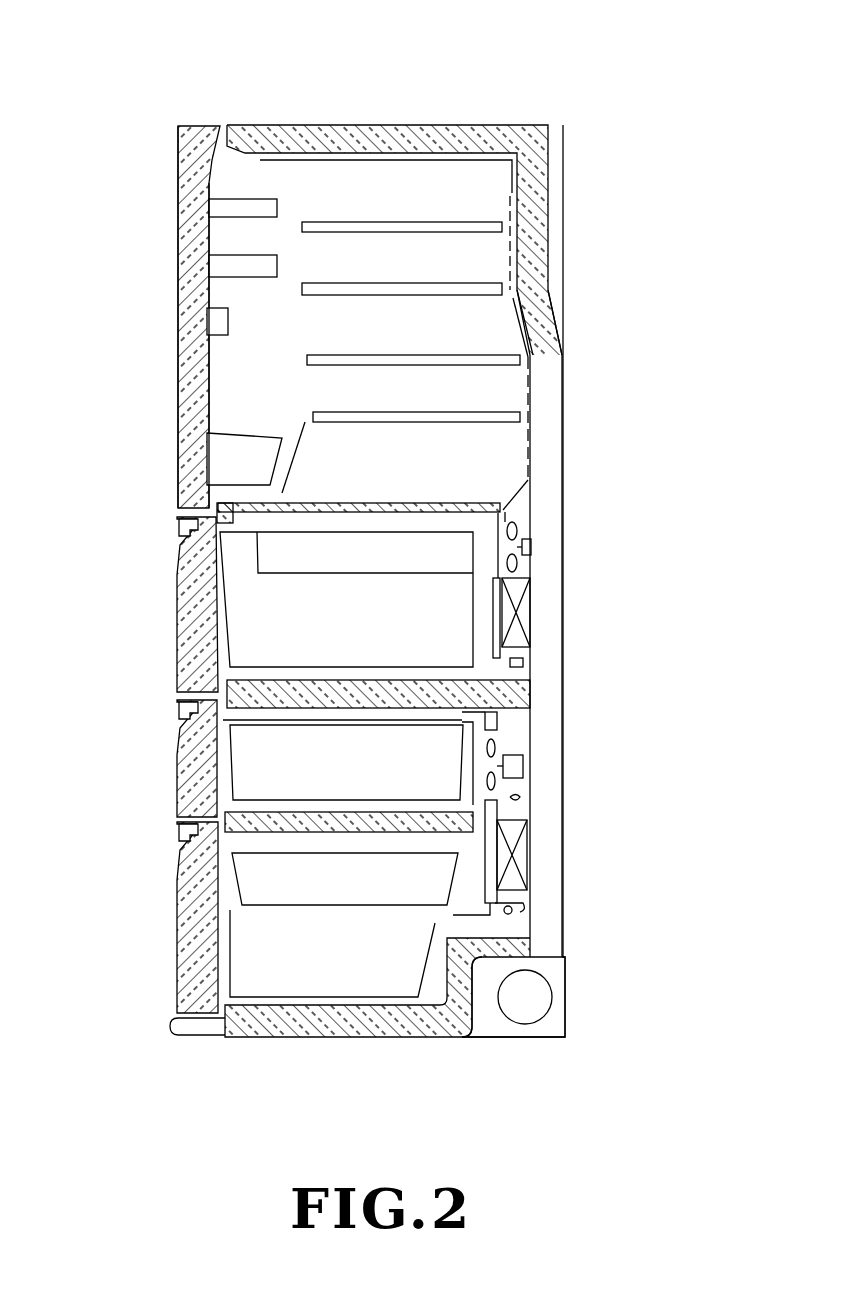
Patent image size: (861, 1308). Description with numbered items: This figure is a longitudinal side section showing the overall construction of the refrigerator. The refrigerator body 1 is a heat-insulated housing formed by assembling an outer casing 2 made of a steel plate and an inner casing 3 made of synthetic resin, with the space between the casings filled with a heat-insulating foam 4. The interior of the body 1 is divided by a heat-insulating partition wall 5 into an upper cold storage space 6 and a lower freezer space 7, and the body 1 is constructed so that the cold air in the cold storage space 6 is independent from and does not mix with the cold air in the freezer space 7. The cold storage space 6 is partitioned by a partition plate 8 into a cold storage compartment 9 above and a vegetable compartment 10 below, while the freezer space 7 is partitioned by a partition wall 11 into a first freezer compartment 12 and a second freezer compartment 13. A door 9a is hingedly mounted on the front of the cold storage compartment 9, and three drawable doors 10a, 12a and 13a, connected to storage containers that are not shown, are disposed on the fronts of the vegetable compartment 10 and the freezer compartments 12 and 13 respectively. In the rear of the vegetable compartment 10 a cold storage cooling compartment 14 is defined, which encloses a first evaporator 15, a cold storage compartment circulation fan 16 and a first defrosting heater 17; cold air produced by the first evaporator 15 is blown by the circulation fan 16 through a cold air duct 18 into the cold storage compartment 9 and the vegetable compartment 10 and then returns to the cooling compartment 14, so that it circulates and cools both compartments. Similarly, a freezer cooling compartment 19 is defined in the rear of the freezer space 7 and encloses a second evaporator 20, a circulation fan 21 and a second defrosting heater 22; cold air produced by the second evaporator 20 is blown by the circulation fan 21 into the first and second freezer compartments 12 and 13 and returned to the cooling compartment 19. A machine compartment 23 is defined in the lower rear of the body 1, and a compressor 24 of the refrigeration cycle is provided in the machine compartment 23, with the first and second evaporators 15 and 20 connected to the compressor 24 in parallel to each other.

The refrigerator body 1 is at (408, 518).
The outer casing 2 is at (452, 127).
The inner casing 3 is at (390, 158).
The heat-insulating foam 4 is at (380, 127).
The heat-insulating partition wall 5 is at (355, 680).
The cold storage space 6 is at (374, 409).
The freezer space 7 is at (374, 851).
The partition plate 8 is at (375, 503).
The cold storage compartment 9 is at (207, 400).
The door 9a is at (177, 245).
The vegetable compartment 10 is at (247, 597).
The drawable door 10a is at (177, 653).
The partition wall 11 is at (362, 805).
The first freezer compartment 12 is at (253, 773).
The drawable door 12a is at (183, 733).
The second freezer compartment 13 is at (258, 933).
The drawable door 13a is at (177, 970).
The cold storage cooling compartment 14 is at (530, 560).
The first evaporator 15 is at (535, 612).
The cold storage compartment circulation fan 16 is at (518, 522).
The first defrosting heater 17 is at (523, 668).
The cold air duct 18 is at (512, 297).
The freezer cooling compartment 19 is at (520, 795).
The second evaporator 20 is at (520, 856).
The circulation fan 21 is at (505, 745).
The second defrosting heater 22 is at (515, 915).
The machine compartment 23 is at (591, 996).
The compressor 24 is at (530, 1002).